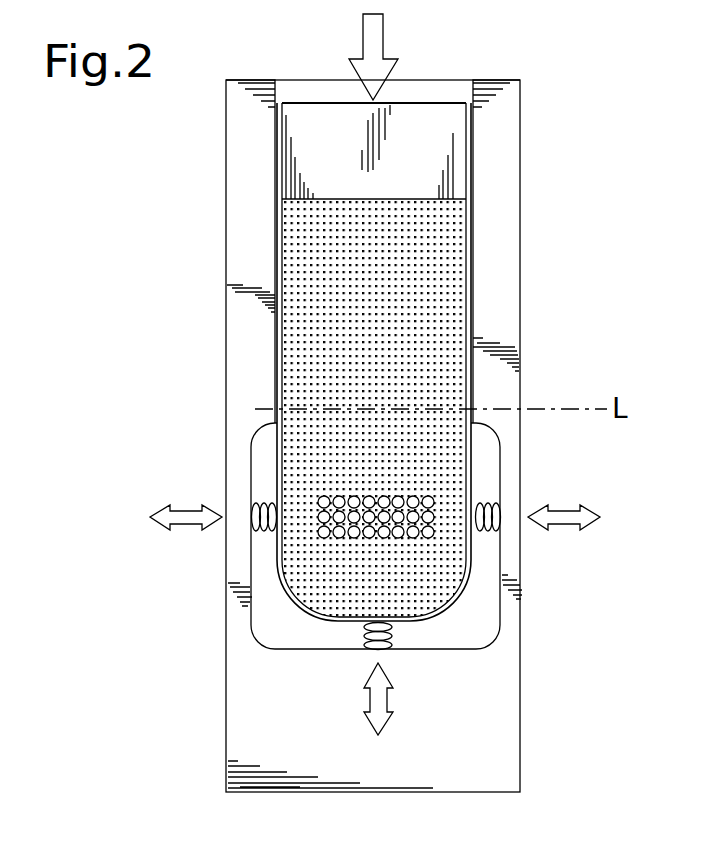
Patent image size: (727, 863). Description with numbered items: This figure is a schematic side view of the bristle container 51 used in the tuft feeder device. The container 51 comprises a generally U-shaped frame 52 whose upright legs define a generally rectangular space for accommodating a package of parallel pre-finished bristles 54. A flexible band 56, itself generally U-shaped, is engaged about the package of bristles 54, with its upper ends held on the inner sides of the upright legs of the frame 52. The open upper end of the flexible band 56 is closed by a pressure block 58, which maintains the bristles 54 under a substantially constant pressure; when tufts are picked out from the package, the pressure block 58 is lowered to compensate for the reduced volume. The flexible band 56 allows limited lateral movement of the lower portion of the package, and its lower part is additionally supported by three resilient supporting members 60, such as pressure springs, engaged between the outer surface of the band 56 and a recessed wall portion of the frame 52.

The container 51 is at (214, 340).
The frame 52 is at (507, 178).
The bristles 54 is at (413, 328).
The flexible band 56 is at (457, 597).
The pressure block 58 is at (418, 115).
The resilient supporting members 60 is at (265, 500).